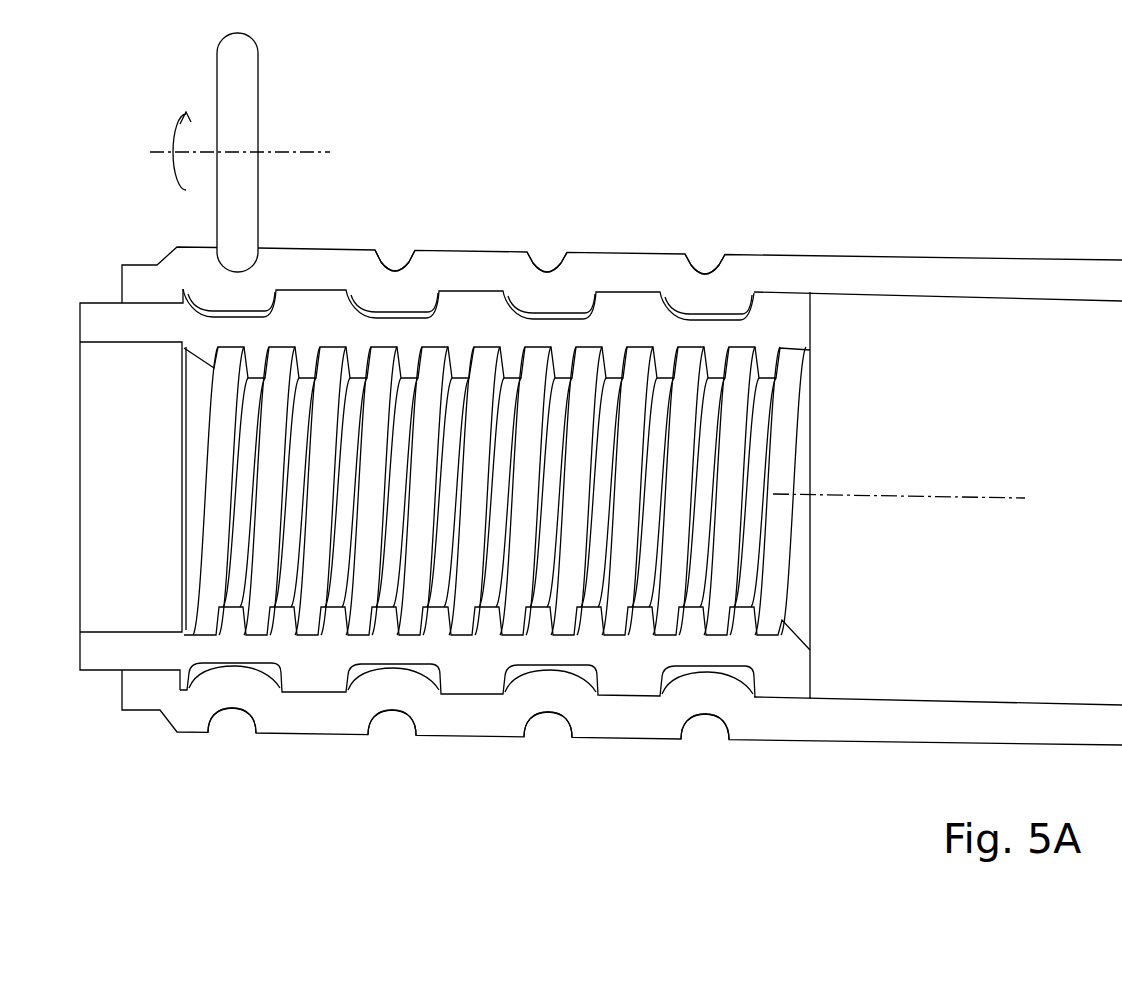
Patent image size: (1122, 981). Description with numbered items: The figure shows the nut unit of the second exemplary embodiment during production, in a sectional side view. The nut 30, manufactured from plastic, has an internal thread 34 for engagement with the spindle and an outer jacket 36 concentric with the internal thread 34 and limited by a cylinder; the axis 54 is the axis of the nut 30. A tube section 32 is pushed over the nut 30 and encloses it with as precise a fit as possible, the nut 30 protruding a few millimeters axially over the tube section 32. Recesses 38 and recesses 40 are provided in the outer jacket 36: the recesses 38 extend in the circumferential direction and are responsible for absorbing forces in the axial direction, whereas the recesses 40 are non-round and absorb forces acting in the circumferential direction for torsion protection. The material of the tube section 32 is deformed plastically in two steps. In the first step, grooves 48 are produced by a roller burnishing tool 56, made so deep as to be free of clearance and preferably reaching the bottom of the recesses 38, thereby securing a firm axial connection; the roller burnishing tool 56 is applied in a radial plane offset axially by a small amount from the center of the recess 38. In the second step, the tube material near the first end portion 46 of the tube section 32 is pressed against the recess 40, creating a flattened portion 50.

The nut 30 is at (793, 332).
The tube section 32 is at (957, 277).
The internal thread 34 is at (735, 630).
The outer jacket 36 is at (627, 700).
The recesses 38 is at (578, 317).
The recesses 40 is at (105, 673).
The first end portion of the tube section 46 is at (365, 782).
The grooves 48 is at (395, 275).
The flattened portion 50 is at (142, 715).
The axis 54 is at (892, 493).
The roller burnishing tool 56 is at (262, 96).